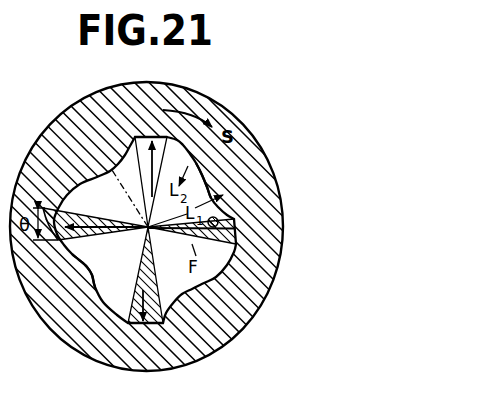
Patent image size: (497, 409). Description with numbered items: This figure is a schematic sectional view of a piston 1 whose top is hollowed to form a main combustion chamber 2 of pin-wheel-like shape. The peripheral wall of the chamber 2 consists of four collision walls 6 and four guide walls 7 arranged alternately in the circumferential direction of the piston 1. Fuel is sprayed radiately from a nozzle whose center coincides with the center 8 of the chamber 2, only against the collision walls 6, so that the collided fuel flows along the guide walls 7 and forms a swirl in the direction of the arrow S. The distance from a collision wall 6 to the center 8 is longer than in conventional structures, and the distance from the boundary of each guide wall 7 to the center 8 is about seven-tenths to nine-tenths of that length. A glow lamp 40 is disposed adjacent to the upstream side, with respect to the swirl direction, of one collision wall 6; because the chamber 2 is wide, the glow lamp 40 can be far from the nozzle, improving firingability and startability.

The piston 1 is at (250, 300).
The main combustion chamber 2 is at (203, 292).
The collision wall 6 is at (242, 238).
The guide wall 7 is at (208, 189).
The center of the chamber 8 is at (148, 230).
The glow lamp 40 is at (220, 218).